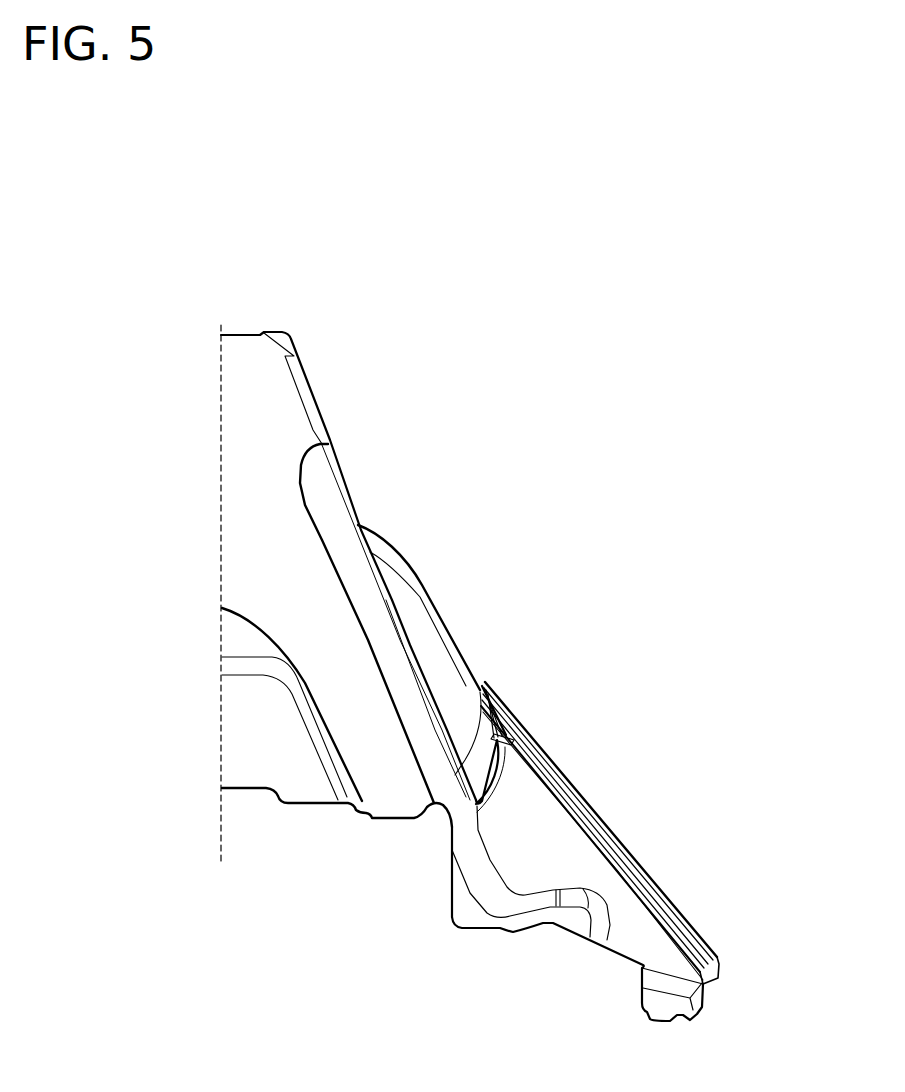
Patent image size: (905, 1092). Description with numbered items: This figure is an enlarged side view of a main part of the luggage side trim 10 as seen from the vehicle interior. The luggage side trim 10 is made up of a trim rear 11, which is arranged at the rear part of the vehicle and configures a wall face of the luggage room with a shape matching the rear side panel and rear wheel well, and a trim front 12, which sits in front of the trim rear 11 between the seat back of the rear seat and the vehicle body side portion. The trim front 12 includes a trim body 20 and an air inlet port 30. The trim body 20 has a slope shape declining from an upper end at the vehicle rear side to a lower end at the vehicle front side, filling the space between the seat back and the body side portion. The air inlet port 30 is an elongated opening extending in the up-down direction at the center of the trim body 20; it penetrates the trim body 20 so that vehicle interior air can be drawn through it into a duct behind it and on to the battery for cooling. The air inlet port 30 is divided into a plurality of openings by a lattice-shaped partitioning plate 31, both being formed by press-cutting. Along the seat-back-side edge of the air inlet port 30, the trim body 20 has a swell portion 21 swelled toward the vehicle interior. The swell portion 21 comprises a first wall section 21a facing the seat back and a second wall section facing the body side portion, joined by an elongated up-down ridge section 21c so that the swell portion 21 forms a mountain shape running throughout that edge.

The luggage side trim 10 is at (375, 312).
The trim rear 11 is at (232, 338).
The trim front 12 is at (582, 793).
The trim body 20 is at (640, 868).
The swell portion 21 is at (450, 788).
The first wall section 21a is at (427, 637).
The ridge section 21c is at (437, 612).
The air inlet port 30 is at (503, 694).
The partitioning plate 31 is at (505, 727).